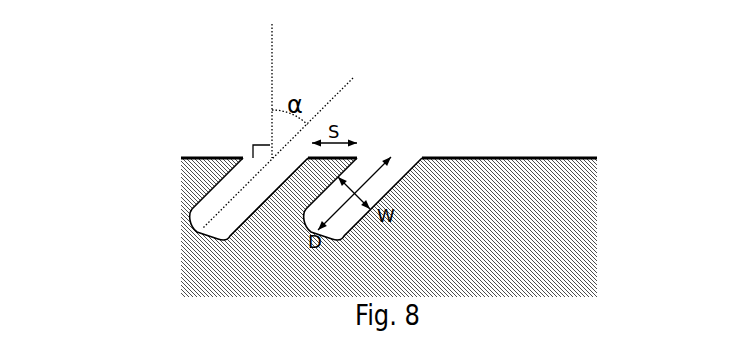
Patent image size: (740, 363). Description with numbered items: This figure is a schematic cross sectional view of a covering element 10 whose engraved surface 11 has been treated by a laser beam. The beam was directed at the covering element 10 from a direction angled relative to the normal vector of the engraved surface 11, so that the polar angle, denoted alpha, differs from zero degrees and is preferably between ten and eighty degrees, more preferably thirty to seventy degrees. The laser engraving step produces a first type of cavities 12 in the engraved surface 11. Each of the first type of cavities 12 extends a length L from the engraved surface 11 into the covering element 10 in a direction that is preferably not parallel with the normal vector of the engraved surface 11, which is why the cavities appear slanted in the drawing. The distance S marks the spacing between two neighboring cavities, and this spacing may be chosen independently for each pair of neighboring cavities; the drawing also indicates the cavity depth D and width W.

The covering element 10 is at (225, 255).
The engraved surface 11 is at (517, 158).
The first type of cavities 12 is at (251, 178).